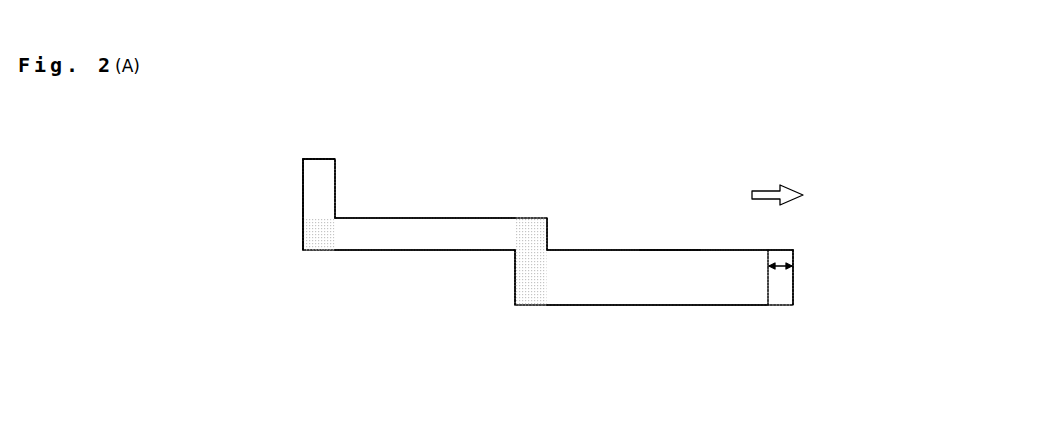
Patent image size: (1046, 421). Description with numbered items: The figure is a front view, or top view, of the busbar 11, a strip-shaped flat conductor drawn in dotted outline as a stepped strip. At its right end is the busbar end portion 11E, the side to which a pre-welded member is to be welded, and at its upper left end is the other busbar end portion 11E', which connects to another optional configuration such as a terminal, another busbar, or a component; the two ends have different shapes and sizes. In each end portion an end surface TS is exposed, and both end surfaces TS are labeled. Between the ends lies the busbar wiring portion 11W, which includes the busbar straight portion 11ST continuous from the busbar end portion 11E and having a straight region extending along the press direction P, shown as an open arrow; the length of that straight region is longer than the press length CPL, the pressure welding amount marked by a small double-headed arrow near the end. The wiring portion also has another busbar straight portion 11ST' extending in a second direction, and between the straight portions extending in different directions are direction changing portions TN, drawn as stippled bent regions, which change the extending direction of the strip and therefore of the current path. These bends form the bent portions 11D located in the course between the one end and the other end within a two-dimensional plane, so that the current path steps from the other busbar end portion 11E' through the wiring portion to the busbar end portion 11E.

The busbar 11 is at (760, 61).
The bent portion 11D is at (303, 250).
The busbar end portion 11E is at (834, 276).
The other busbar end portion 11E' is at (295, 170).
The busbar straight portion 11ST is at (664, 313).
The another busbar straight portion 11ST' is at (425, 249).
The busbar wiring portion 11W is at (645, 230).
The direction changing portion TN is at (317, 234).
The end surface TS is at (335, 159).
The press length CPL is at (784, 256).
The press direction P is at (777, 184).